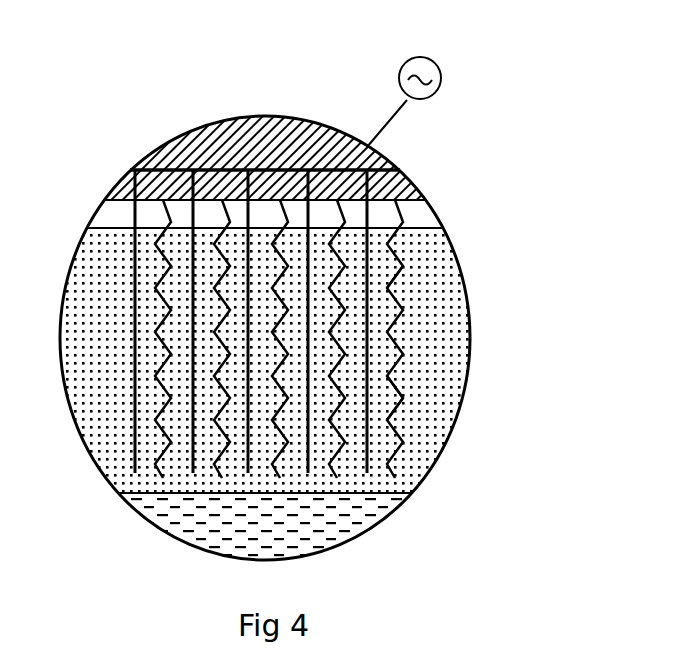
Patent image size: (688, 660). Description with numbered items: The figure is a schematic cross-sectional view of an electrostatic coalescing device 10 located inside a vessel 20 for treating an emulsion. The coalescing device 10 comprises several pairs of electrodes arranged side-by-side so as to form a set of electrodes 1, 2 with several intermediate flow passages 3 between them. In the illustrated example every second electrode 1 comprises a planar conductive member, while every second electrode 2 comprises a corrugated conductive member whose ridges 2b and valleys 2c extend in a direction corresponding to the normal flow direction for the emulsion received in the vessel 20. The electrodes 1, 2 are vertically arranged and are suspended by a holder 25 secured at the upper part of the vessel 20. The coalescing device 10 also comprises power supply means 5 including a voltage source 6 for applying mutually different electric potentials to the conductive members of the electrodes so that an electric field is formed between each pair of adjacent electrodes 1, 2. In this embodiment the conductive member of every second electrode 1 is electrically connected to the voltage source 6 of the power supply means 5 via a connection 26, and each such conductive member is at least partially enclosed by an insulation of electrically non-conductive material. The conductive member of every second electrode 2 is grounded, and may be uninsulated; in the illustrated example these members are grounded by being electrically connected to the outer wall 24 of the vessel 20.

The electrostatic coalescing device 10 is at (257, 92).
The holder 25 is at (190, 128).
The connection 26 is at (383, 112).
The voltage source 6 is at (441, 72).
The power supply means 5 is at (414, 127).
The outer wall 24 is at (410, 175).
The intermediate flow passages 3 is at (385, 272).
The electrode 2 is at (398, 306).
The electrode 1 is at (365, 345).
The ridges 2b is at (392, 383).
The valleys 2c is at (393, 410).
The vessel 20 is at (448, 430).